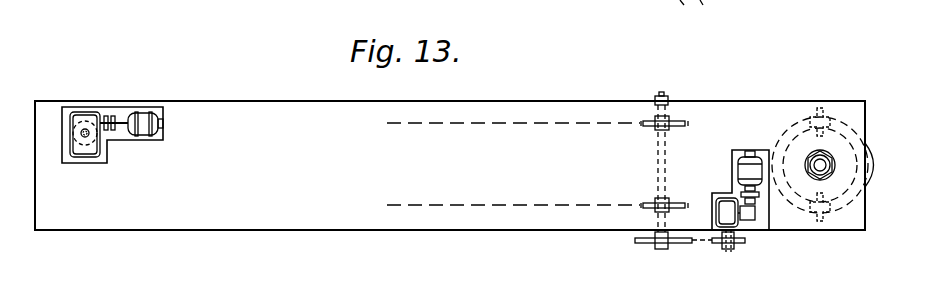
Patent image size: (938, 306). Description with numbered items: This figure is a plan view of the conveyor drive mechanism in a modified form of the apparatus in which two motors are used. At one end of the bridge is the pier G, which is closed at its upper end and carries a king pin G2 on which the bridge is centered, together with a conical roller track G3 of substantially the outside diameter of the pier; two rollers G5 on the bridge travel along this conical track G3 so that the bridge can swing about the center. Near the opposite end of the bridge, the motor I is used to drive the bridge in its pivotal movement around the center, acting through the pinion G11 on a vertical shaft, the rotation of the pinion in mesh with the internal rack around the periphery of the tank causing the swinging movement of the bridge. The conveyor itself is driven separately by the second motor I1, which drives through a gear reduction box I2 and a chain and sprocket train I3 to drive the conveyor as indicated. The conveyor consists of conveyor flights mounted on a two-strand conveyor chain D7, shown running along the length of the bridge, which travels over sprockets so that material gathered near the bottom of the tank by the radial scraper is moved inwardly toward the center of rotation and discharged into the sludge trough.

The motor I is at (141, 118).
The pinion G11 is at (88, 148).
The two-strand conveyor chain D7 is at (480, 124).
The chain and sprocket train I3 is at (702, 246).
The motor I1 is at (745, 170).
The gear reduction box I2 is at (728, 212).
The pier G is at (876, 160).
The conical roller track G3 is at (842, 126).
The king pin G2 is at (824, 166).
The rollers G5 is at (834, 207).